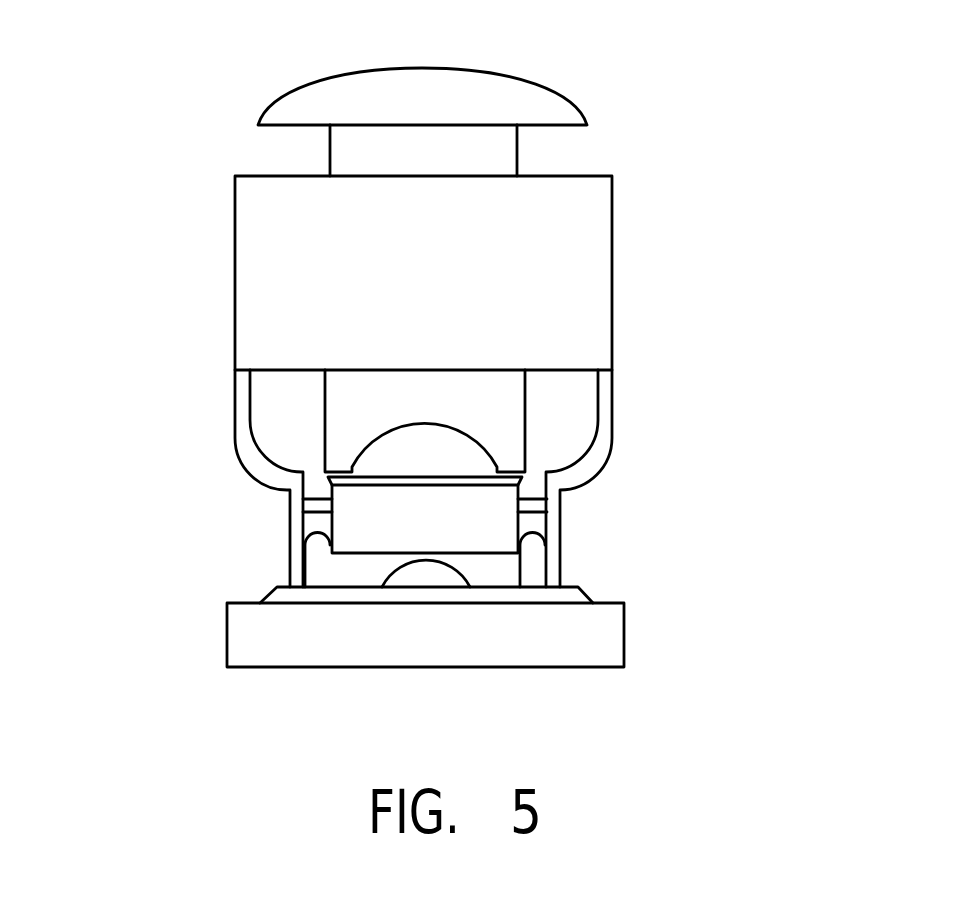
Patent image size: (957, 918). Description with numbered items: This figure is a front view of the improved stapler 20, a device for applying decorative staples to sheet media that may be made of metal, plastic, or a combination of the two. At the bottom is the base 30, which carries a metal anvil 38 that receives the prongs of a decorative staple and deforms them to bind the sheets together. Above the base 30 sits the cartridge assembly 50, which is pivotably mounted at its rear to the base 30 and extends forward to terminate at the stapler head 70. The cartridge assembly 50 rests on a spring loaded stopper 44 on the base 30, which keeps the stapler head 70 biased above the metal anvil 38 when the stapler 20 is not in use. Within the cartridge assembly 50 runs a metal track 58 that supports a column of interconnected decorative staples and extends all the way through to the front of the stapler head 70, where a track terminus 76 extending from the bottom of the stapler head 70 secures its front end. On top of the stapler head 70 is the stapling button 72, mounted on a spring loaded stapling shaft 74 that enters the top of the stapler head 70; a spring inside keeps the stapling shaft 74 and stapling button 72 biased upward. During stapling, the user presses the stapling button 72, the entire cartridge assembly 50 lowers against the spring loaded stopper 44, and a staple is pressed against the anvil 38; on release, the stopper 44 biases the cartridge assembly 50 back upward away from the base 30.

The stapler 20 is at (716, 289).
The base 30 is at (620, 638).
The metal anvil 38 is at (567, 583).
The spring loaded stopper 44 is at (423, 575).
The cartridge assembly 50 is at (607, 425).
The metal track 58 is at (352, 523).
The stapler head 70 is at (603, 235).
The stapling button 72 is at (538, 83).
The spring loaded stapling shaft 74 is at (343, 152).
The track terminus 76 is at (340, 413).